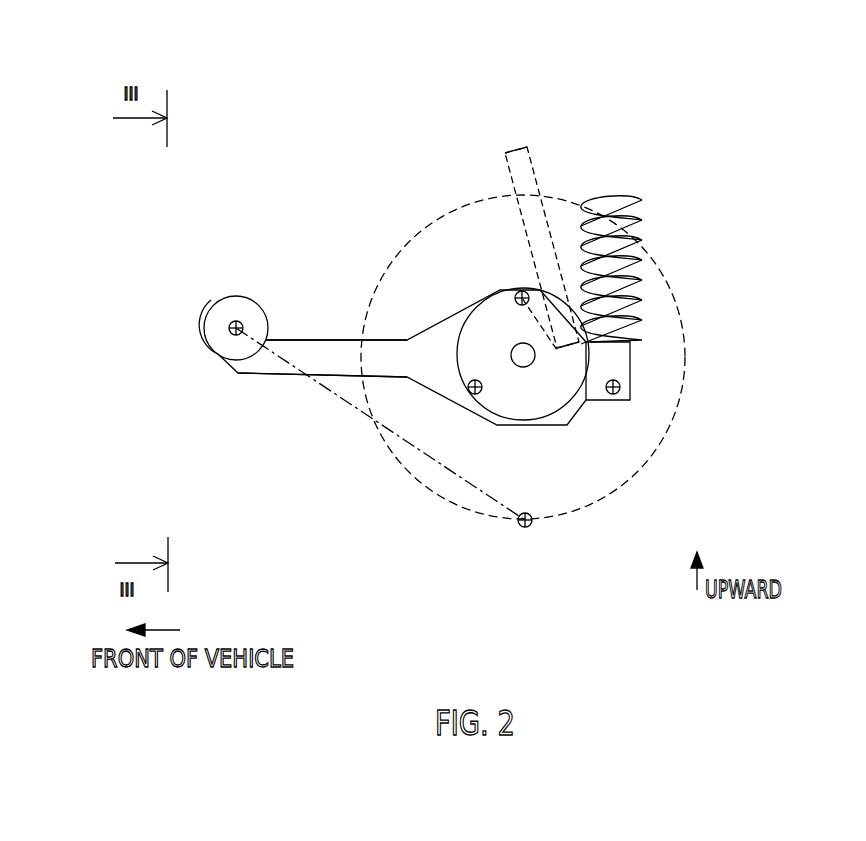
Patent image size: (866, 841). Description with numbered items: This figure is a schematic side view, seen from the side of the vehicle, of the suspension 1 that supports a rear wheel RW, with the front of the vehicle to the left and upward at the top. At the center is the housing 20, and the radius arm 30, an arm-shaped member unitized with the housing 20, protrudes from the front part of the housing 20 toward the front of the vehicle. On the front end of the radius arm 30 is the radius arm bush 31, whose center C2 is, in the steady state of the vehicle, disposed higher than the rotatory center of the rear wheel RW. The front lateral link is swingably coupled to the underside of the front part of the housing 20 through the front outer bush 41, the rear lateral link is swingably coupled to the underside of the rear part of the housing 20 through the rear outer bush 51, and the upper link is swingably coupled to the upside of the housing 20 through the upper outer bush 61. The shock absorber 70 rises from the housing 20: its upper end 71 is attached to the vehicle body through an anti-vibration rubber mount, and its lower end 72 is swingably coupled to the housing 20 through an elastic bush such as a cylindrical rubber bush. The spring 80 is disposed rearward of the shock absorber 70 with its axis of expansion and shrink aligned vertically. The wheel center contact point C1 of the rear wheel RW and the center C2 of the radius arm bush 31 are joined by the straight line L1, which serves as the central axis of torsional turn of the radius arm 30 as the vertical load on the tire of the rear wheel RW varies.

The suspension 1 is at (588, 160).
The housing 20 is at (458, 308).
The radius arm 30 is at (292, 341).
The radius arm bush 31 is at (212, 348).
The front outer bush 41 is at (475, 392).
The rear outer bush 51 is at (618, 389).
The upper outer bush 61 is at (520, 294).
The shock absorber 70 is at (558, 277).
The upper end of the shock absorber 71 is at (507, 155).
The lower end of the shock absorber 72 is at (575, 342).
The spring 80 is at (637, 201).
The wheel center contact point C1 is at (530, 527).
The center of the radius arm bush C2 is at (228, 324).
The straight line L1 is at (345, 400).
The rear wheel RW is at (640, 465).